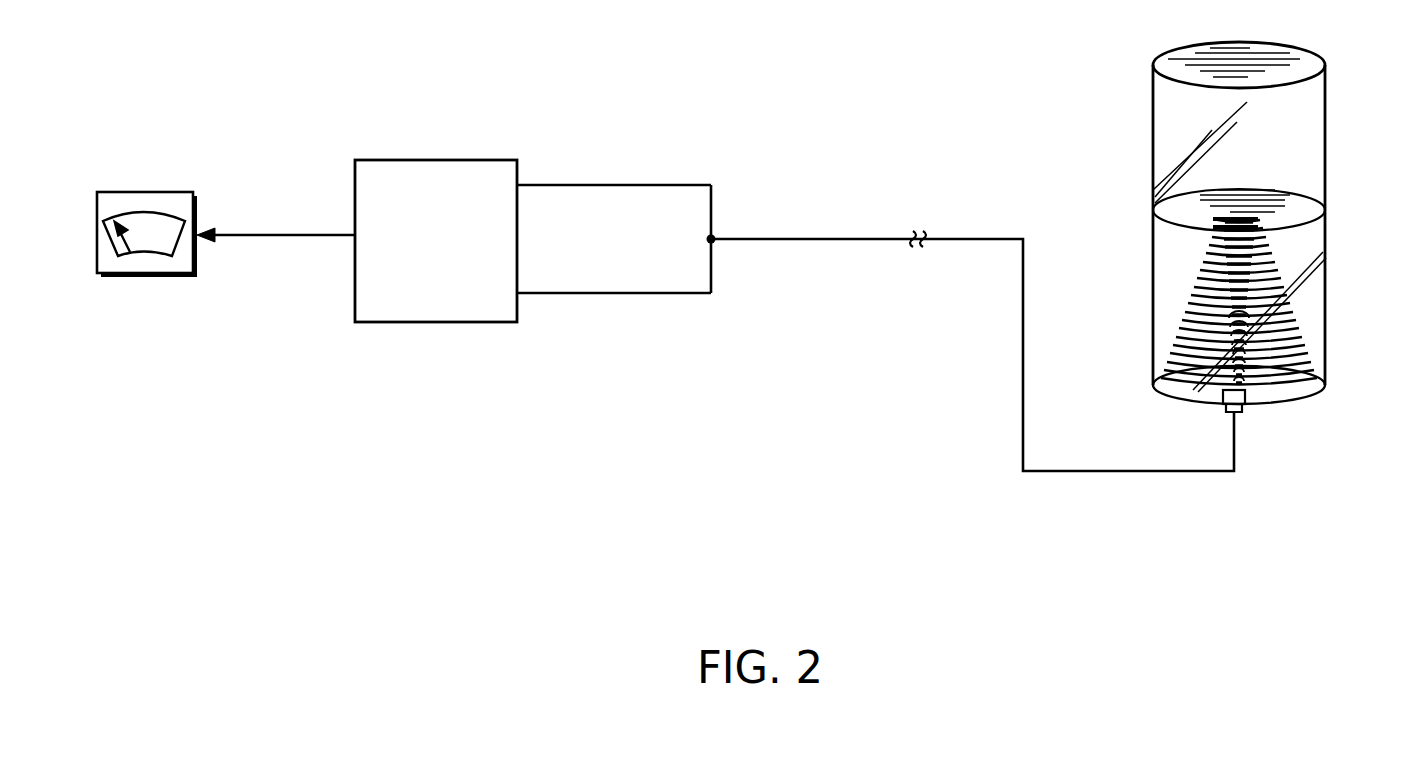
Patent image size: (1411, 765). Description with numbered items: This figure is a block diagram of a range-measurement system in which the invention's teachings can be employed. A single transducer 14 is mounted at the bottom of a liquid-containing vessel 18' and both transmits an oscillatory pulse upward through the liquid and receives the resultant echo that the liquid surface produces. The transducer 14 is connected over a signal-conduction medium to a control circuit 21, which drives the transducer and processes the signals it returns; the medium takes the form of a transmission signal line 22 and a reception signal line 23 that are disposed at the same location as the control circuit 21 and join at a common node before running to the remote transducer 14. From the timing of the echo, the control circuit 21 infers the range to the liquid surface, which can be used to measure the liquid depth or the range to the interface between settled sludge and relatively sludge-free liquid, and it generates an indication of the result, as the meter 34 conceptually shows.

The transducer 14 is at (1247, 405).
The tank / vessel 18' is at (1270, 223).
The control circuit 21 is at (434, 160).
The transmission signal line 22 is at (604, 185).
The reception signal line 23 is at (603, 293).
The meter 34 is at (147, 192).